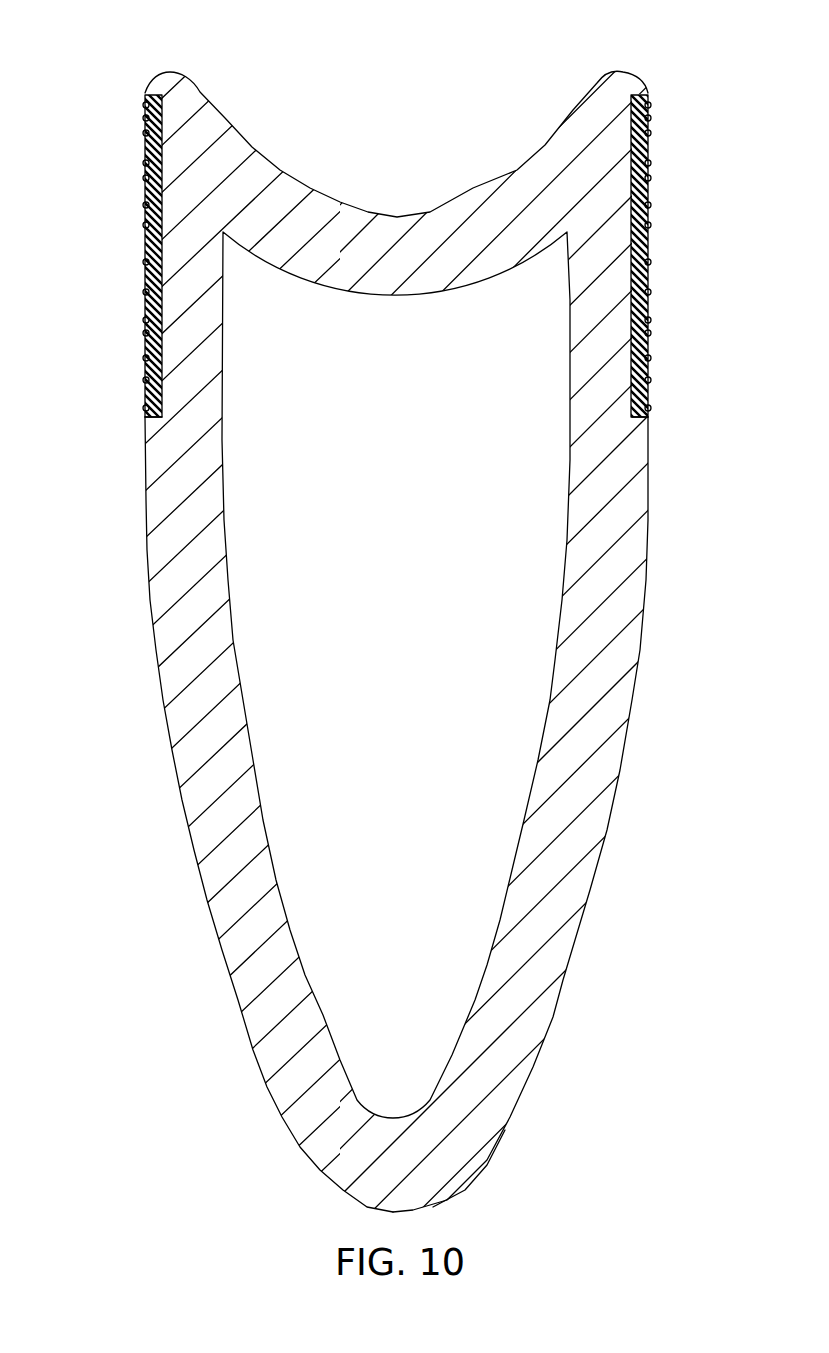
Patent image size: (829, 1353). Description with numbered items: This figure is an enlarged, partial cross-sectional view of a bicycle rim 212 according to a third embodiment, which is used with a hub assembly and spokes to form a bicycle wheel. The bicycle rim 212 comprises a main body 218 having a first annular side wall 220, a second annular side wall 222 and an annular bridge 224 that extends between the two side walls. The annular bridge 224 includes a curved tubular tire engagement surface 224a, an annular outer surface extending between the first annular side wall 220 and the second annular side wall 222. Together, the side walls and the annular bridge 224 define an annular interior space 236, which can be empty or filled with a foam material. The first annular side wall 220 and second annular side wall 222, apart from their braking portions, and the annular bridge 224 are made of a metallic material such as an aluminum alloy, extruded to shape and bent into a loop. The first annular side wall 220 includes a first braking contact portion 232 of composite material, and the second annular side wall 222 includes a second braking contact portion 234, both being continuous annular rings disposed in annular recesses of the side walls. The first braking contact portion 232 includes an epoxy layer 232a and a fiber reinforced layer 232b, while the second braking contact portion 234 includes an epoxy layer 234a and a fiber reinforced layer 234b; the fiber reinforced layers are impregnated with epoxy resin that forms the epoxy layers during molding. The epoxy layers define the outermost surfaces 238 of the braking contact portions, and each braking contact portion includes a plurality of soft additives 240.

The bicycle rim 212 is at (662, 36).
The main body 218 is at (733, 512).
The first annular side wall 220 is at (245, 690).
The second annular side wall 222 is at (648, 572).
The annular bridge 224 is at (402, 297).
The curved tubular tire engagement surface 224a is at (400, 216).
The first braking contact portion 232 is at (100, 84).
The epoxy layer 232a is at (152, 345).
The fiber reinforced layer 232b is at (162, 318).
The second braking contact portion 234 is at (696, 84).
The epoxy layer 234a is at (637, 343).
The fiber reinforced layer 234b is at (632, 311).
The annular interior space 236 is at (417, 458).
The outermost surfaces 238 is at (146, 111).
The soft additives 240 is at (146, 412).